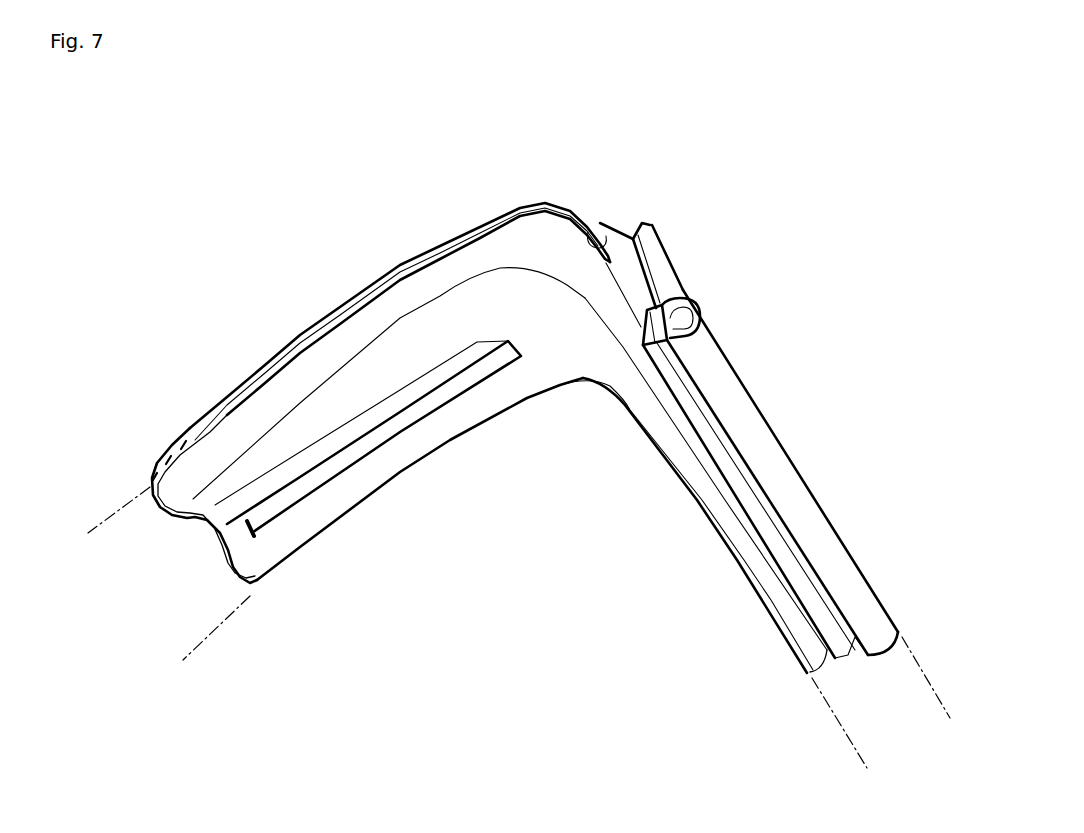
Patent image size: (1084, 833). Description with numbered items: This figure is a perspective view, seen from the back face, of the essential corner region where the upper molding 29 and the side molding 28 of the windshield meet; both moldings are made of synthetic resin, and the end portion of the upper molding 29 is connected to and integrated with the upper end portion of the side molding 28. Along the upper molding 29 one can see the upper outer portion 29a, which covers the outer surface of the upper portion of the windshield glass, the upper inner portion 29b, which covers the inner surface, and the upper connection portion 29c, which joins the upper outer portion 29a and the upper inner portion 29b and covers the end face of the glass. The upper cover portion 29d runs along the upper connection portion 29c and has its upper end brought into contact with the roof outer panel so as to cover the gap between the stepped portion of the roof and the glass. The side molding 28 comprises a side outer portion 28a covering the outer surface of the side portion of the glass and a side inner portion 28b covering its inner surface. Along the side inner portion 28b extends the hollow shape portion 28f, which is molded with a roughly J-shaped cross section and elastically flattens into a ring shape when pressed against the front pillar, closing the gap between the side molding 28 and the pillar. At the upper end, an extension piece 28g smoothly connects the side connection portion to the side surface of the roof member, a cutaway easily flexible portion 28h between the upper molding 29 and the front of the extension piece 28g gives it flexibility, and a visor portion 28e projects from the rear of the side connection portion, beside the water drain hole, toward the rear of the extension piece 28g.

The side molding 28 is at (783, 442).
The side outer portion 28a is at (700, 503).
The side inner portion 28b is at (652, 295).
The visor portion 28e is at (672, 265).
The hollow shape portion 28f is at (813, 485).
The extension piece 28g is at (634, 222).
The easily flexible portion 28h is at (592, 224).
The upper molding 29 is at (333, 312).
The upper outer portion 29a is at (287, 533).
The upper inner portion 29b is at (363, 441).
The upper connection portion 29c is at (407, 396).
The upper cover portion 29d is at (227, 403).